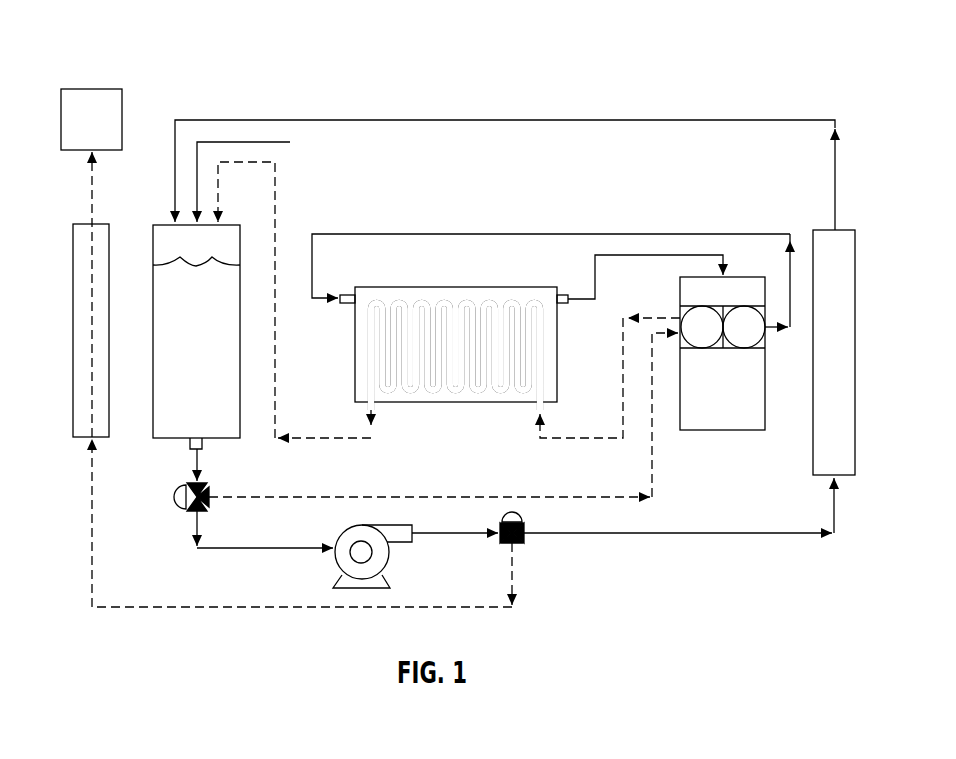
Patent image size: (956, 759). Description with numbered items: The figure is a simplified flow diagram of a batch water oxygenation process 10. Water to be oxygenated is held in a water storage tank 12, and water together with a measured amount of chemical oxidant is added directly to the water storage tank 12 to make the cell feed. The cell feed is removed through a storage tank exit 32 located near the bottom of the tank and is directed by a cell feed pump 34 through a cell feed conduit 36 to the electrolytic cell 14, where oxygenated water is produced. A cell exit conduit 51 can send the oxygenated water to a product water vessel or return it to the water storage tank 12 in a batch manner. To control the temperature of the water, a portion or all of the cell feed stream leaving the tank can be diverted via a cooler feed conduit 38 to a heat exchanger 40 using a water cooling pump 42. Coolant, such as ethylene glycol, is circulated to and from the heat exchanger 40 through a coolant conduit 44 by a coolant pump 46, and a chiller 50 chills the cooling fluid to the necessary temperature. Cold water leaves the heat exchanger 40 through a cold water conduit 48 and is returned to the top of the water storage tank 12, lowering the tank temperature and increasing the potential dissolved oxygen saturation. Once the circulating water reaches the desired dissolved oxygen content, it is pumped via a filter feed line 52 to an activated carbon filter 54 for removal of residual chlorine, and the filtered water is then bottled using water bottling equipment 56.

The water oxygenation process 10 is at (101, 39).
The water storage tank 12 is at (165, 224).
The electrolytic cell 14 is at (826, 230).
The storage tank exit 32 is at (190, 440).
The cell feed pump 34 is at (345, 530).
The cell feed conduit 36 is at (565, 535).
The cooler feed conduit 38 is at (318, 495).
The heat exchanger 40 is at (365, 285).
The water cooling pump 42 is at (700, 343).
The coolant conduit 44 is at (368, 233).
The coolant pump 46 is at (750, 343).
The cold water conduit 48 is at (338, 437).
The chiller 50 is at (748, 431).
The cell exit conduit 51 is at (820, 120).
The filter feed line 52 is at (117, 607).
The activated carbon filter 54 is at (80, 223).
The water bottling equipment 56 is at (80, 88).